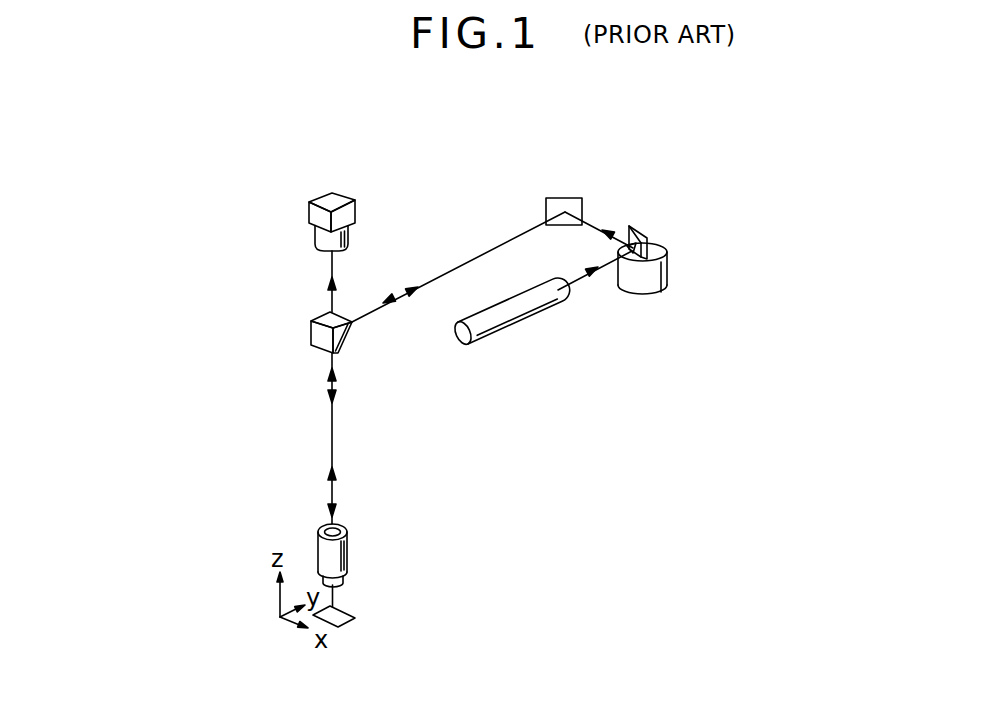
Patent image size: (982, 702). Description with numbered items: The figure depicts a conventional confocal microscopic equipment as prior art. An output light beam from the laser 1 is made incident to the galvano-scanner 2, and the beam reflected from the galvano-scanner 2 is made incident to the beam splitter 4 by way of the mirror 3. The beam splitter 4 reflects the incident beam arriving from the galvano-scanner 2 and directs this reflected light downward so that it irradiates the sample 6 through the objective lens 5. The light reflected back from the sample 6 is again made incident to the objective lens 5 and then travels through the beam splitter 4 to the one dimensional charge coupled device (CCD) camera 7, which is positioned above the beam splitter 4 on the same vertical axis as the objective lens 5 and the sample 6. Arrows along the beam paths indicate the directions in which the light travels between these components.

The laser 1 is at (512, 330).
The galvano-scanner 2 is at (638, 282).
The mirror 3 is at (575, 200).
The beam splitter 4 is at (317, 333).
The objective lens 5 is at (347, 558).
The sample 6 is at (355, 618).
The one dimensional charge coupled device (CCD) camera 7 is at (331, 200).